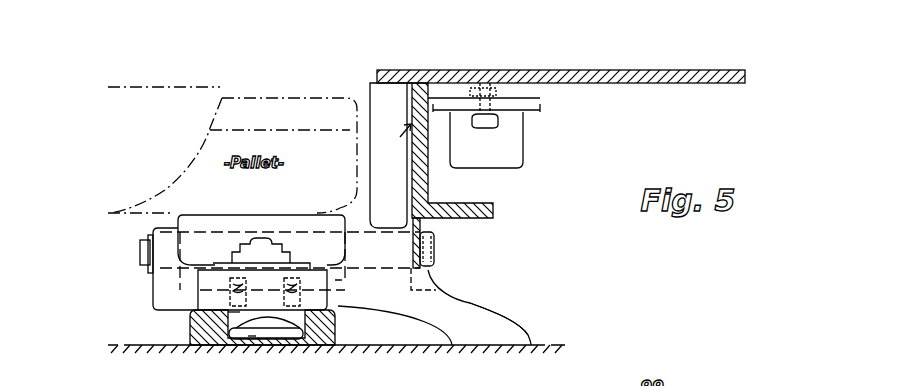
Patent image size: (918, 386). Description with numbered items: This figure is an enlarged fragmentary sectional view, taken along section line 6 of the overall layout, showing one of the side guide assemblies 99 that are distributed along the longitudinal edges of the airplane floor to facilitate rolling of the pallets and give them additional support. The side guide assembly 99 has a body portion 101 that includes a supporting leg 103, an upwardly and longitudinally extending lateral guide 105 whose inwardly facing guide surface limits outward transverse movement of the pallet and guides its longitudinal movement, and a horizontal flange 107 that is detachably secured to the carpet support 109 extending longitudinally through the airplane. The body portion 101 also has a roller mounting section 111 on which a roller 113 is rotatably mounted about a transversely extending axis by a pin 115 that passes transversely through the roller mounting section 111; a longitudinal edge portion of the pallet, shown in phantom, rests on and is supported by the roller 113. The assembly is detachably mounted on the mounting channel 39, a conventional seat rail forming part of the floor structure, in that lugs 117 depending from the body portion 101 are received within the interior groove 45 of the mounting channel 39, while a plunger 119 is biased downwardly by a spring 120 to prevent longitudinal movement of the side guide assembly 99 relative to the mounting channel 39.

The section line 6- 6 is at (600, 84).
The mounting channel 39 is at (190, 332).
The interior groove 45 is at (242, 312).
The side guide assembly 99 is at (462, 297).
The body portion 101 is at (490, 298).
The supporting leg 103 is at (500, 328).
The lateral guide 105 is at (393, 96).
The horizontal flange 107 is at (470, 92).
The carpet support 109 is at (657, 72).
The roller mounting section 111 is at (160, 284).
The roller 113 is at (228, 224).
The pin 115 is at (138, 246).
The lugs 117 is at (266, 322).
The plunger 119 is at (250, 338).
The spring 120 is at (338, 283).